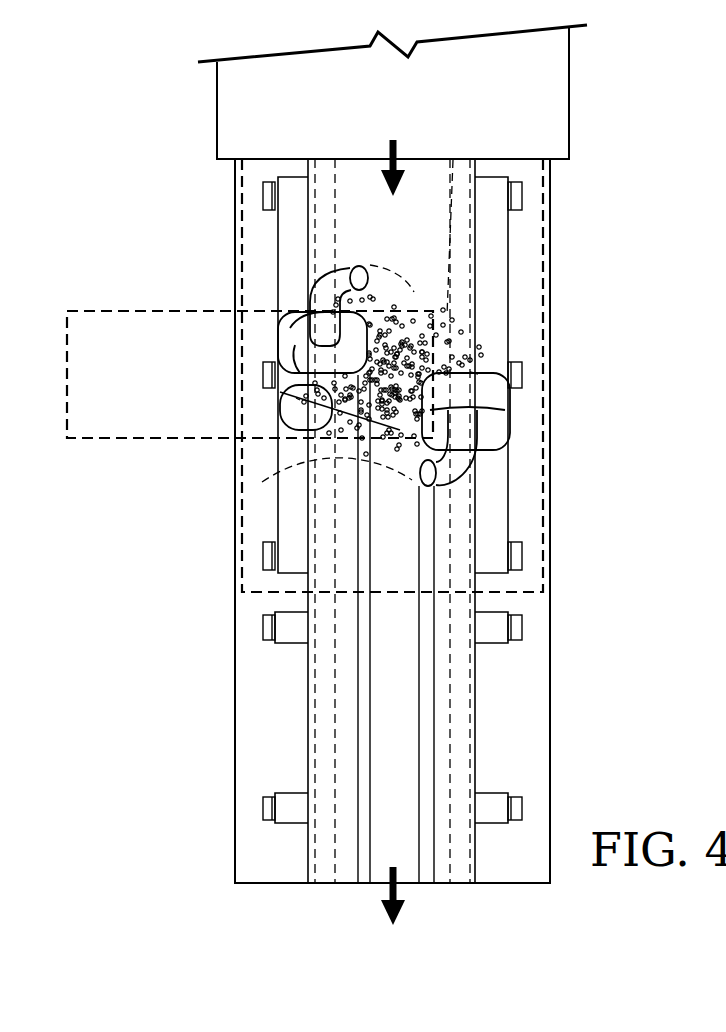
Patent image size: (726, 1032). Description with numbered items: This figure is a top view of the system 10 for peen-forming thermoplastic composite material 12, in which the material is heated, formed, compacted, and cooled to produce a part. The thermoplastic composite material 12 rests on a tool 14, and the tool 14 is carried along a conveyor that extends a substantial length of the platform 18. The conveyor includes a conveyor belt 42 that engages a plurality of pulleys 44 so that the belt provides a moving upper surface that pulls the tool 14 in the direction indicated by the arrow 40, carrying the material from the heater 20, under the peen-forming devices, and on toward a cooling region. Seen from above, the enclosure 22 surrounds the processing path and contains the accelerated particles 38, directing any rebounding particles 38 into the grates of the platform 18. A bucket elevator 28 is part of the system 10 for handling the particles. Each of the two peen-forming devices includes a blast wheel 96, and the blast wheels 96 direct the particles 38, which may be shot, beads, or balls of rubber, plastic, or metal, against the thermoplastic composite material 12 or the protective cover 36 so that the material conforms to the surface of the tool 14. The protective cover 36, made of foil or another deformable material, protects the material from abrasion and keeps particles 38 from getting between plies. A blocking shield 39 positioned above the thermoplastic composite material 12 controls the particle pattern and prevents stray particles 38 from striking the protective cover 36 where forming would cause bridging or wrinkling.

The system 10 is at (660, 118).
The thermoplastic composite material 12 is at (312, 460).
The tool 14 is at (480, 300).
The platform 18 is at (543, 712).
The heater 20 is at (569, 75).
The enclosure 22 is at (545, 372).
The bucket elevator 28 is at (128, 310).
The protective cover 36 is at (477, 677).
The particles 38 is at (293, 398).
The blocking shield 39 is at (293, 423).
The arrow 40 is at (396, 150).
The conveyor belt 42 is at (497, 265).
The pulleys 44 is at (290, 800).
The blast wheel 96 is at (290, 358).